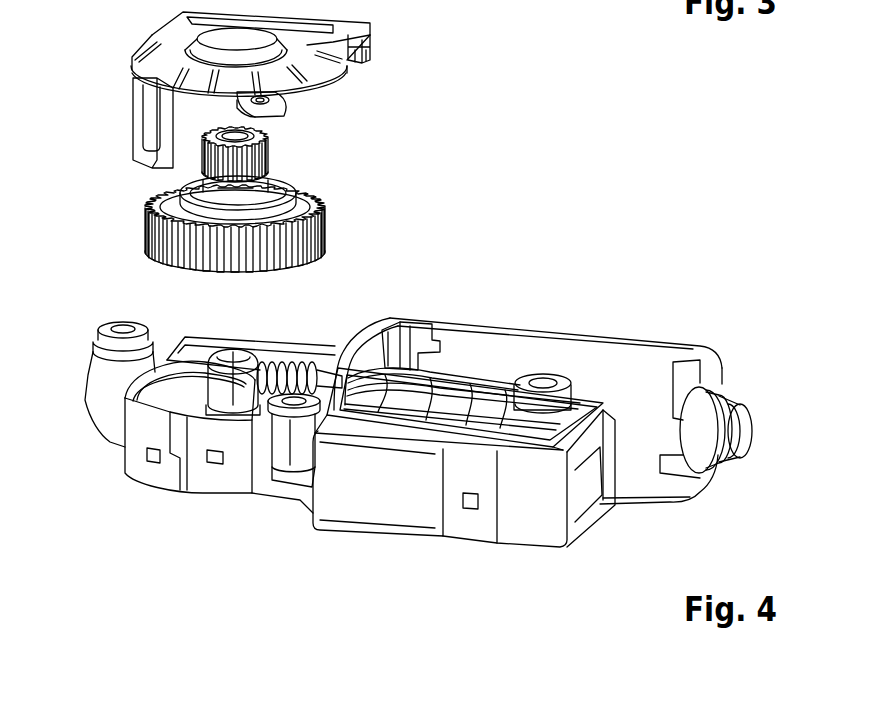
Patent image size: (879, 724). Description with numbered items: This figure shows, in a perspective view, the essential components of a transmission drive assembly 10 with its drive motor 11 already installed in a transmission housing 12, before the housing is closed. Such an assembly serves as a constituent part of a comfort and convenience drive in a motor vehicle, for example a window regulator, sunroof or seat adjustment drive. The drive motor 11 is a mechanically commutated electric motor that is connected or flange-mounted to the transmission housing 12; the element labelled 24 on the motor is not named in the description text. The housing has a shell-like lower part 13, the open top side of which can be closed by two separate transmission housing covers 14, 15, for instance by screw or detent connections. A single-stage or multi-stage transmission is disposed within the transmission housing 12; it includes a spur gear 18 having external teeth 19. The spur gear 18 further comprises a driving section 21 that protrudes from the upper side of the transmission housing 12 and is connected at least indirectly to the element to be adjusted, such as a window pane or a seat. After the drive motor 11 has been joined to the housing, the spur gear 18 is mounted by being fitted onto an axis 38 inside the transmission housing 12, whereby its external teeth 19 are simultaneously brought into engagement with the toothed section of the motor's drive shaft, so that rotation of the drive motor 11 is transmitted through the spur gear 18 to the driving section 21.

The transmission drive assembly 10 is at (472, 137).
The drive motor 11 is at (657, 320).
The transmission housing 12 is at (337, 557).
The shell-like lower part 13 is at (400, 507).
The transmission housing cover 14 is at (474, 395).
The transmission housing cover 15 is at (140, 49).
The spur gear 18 is at (340, 176).
The external teeth 19 is at (327, 229).
The driving section 21 is at (270, 146).
The pole housing 24 is at (573, 345).
The axis 38 is at (232, 357).